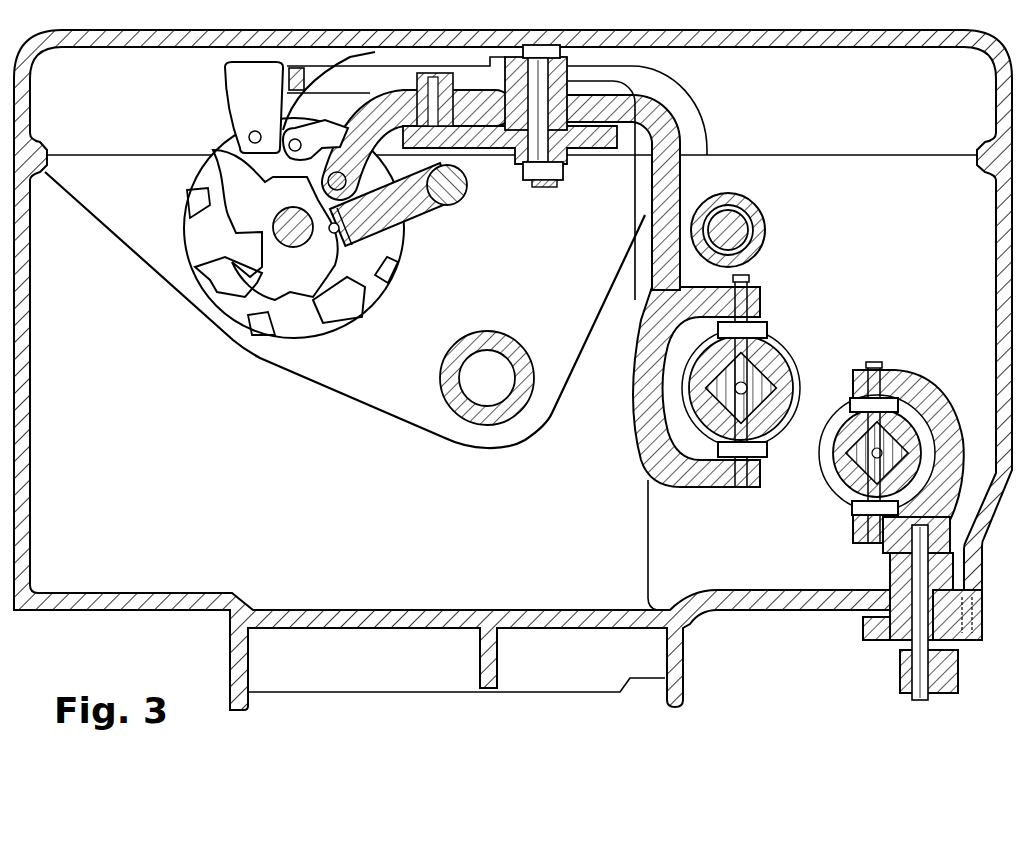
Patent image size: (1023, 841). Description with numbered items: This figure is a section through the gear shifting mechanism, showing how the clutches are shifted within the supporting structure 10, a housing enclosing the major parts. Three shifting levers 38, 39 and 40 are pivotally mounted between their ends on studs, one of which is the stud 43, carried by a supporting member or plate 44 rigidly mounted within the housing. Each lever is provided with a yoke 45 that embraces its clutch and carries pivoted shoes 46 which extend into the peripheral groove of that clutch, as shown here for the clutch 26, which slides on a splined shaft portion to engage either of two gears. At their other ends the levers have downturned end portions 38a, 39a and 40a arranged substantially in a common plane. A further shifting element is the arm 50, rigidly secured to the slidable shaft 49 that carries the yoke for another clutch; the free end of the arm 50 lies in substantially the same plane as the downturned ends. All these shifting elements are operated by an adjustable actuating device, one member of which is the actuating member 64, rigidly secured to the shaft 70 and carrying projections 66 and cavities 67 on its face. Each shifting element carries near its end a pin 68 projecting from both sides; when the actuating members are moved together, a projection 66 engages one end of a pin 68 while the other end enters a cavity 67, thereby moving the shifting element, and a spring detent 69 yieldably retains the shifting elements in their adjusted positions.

The supporting structure 10 is at (36, 398).
The clutch 26 is at (780, 368).
The lever 38 is at (303, 70).
The downturned end portion 38a is at (237, 100).
The lever 39 is at (468, 64).
The downturned end portion 39a is at (310, 113).
The lever 40 is at (544, 188).
The downturned end portion 40a is at (350, 103).
The stud 43 is at (568, 66).
The supporting member or plate 44 is at (575, 150).
The yoke 45 is at (640, 435).
The pivoted shoes 46 is at (768, 330).
The slidable shaft 49 is at (468, 183).
The arm 50 is at (413, 205).
The actuating member 64 is at (365, 313).
The projections 66 is at (376, 290).
The cavities 67 is at (190, 237).
The pin 68 is at (248, 137).
The spring detent 69 is at (457, 150).
The shaft 70 is at (290, 243).